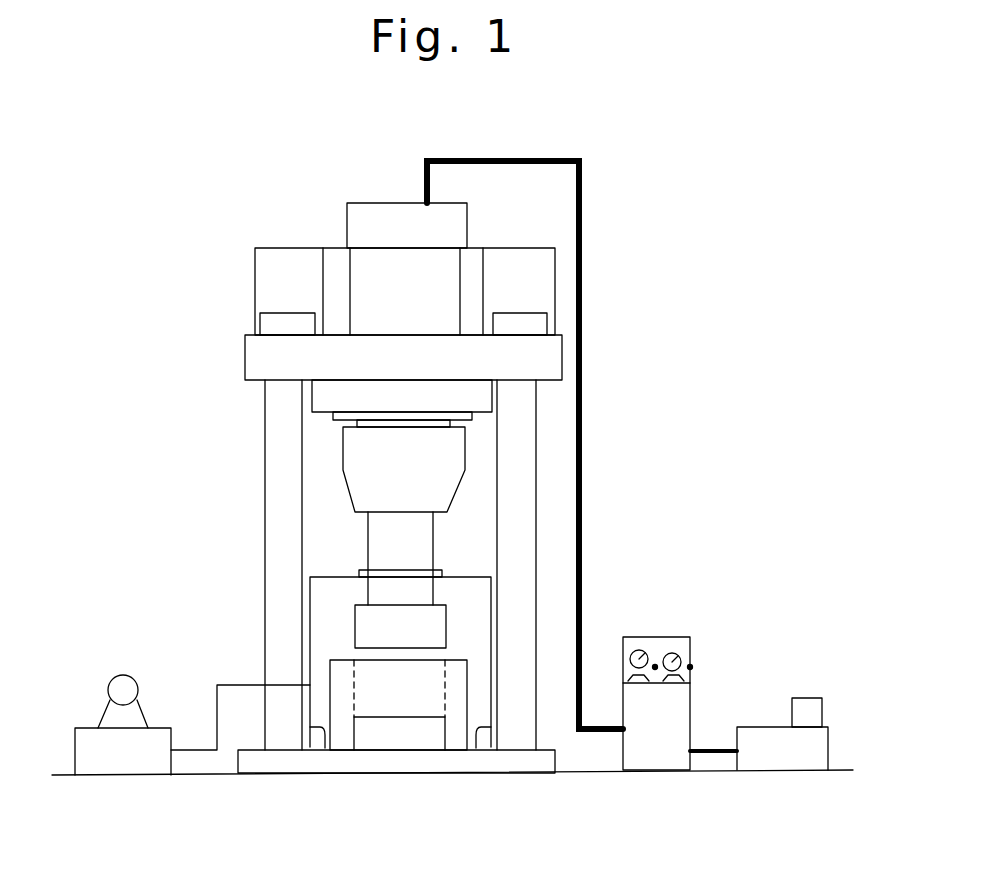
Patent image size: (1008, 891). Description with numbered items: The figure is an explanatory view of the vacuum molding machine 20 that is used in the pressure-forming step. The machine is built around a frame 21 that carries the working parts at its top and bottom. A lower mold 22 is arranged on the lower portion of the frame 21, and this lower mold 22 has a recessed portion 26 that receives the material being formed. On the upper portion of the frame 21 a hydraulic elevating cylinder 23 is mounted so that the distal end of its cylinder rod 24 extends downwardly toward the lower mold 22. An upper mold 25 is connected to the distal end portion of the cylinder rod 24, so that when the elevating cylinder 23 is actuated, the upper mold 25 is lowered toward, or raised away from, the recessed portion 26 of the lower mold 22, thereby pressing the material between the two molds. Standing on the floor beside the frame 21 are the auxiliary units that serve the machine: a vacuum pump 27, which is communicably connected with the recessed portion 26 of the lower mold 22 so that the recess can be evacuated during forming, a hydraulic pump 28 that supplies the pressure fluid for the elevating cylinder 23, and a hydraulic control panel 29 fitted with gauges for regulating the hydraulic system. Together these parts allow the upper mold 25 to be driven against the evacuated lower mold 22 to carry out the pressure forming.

The vacuum molding machine 20 is at (222, 468).
The frame 21 is at (245, 363).
The lower mold 22 is at (460, 682).
The hydraulic elevating cylinder 23 is at (360, 230).
The cylinder rod 24 is at (370, 547).
The upper mold 25 is at (365, 628).
The recessed portion 26 is at (358, 700).
The vacuum pump 27 is at (147, 763).
The hydraulic pump 28 is at (778, 760).
The hydraulic control panel 29 is at (663, 650).